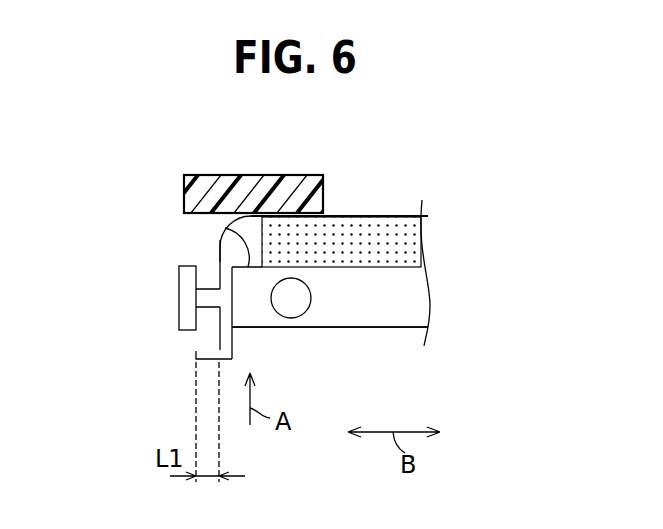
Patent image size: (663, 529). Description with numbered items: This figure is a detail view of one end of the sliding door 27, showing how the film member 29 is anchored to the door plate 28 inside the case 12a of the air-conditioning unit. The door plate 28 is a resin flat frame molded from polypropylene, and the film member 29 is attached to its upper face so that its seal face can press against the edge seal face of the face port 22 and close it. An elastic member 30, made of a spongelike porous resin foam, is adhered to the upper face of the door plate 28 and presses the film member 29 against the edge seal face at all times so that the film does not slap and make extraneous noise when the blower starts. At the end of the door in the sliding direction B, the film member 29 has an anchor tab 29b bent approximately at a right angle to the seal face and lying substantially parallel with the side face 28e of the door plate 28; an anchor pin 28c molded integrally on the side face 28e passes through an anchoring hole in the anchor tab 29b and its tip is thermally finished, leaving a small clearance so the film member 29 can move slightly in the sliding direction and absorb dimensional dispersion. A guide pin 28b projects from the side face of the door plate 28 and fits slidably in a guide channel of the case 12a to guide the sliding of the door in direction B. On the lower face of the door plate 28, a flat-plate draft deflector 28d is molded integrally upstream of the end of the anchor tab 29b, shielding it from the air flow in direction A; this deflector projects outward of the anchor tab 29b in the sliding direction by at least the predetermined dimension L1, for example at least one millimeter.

The case 12a is at (290, 182).
The face port 22 is at (348, 200).
The film member 29 is at (383, 215).
The elastic member 30 is at (407, 237).
The door plate 28 is at (377, 310).
The side face 28e is at (225, 230).
The anchor tab 29b is at (220, 254).
The anchor pin 28c is at (207, 299).
The draft deflector 28d is at (202, 358).
The guide pin 28b is at (293, 302).
The sliding door 27 is at (343, 346).